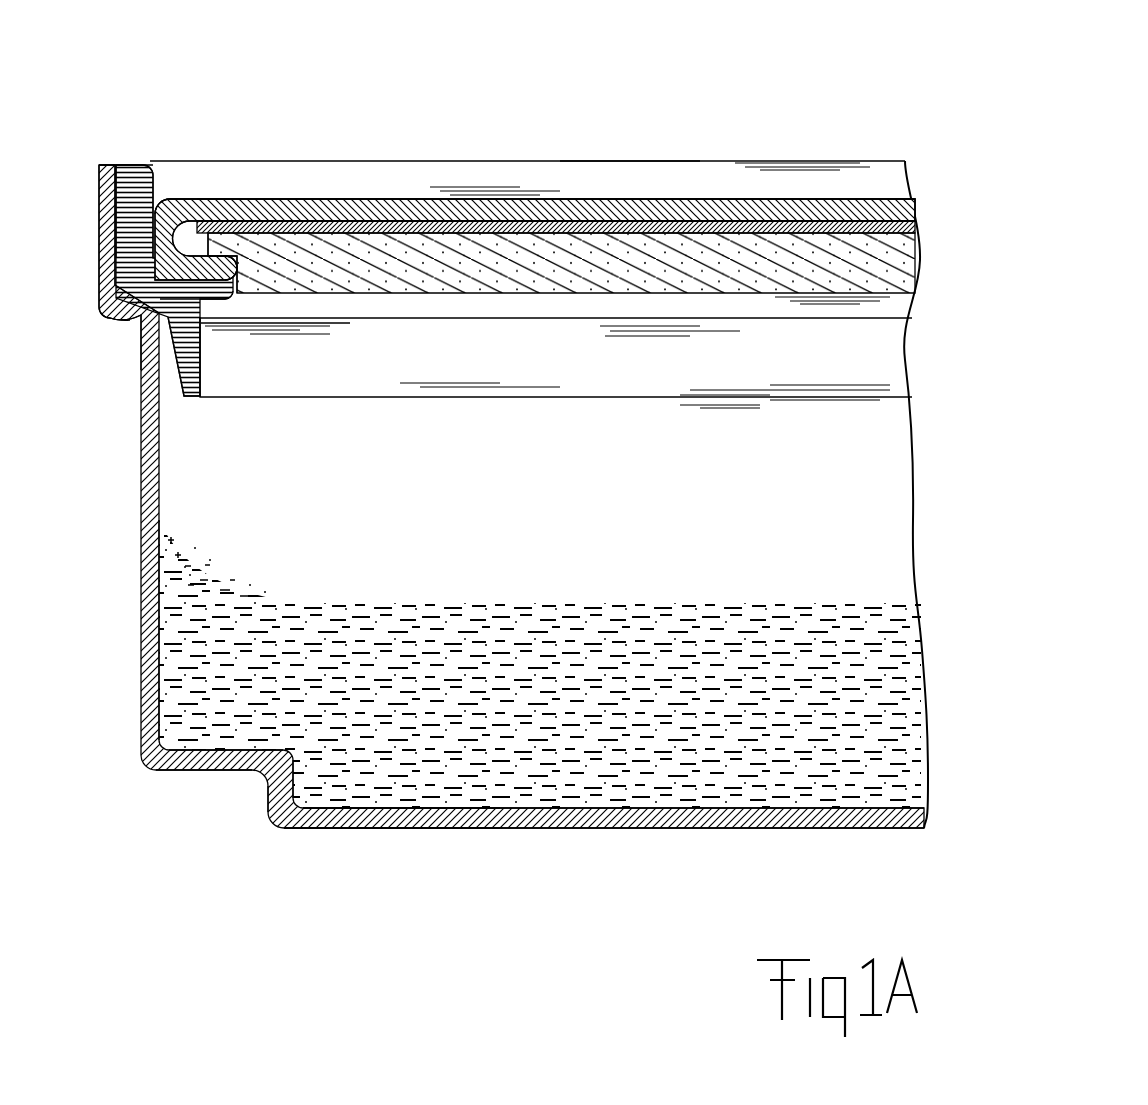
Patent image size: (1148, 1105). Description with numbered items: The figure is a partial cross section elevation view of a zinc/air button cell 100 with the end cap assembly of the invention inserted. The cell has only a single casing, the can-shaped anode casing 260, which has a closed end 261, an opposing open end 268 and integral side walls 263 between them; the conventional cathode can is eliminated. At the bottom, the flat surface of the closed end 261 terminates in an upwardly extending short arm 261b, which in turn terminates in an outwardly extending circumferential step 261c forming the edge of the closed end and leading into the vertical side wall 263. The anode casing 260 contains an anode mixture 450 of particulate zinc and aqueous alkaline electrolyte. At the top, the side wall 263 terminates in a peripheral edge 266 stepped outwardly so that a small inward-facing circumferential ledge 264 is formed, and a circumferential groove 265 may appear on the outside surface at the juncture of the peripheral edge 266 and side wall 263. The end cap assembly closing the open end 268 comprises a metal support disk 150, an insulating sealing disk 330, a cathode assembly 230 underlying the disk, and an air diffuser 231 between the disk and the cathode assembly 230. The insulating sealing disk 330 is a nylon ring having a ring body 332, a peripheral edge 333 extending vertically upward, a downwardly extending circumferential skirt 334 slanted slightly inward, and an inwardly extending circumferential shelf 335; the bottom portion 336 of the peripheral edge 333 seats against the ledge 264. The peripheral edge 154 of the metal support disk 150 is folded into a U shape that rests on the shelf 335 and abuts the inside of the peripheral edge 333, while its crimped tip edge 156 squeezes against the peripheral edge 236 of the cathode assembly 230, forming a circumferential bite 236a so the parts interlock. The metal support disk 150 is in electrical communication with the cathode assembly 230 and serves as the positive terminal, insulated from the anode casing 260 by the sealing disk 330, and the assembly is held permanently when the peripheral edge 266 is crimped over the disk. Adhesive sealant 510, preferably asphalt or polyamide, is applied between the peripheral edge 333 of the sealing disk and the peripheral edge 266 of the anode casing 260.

The zinc/air button cell 100 is at (528, 63).
The metal support disk 150 is at (641, 197).
The peripheral edge of metal support disk 154 is at (165, 205).
The crimped tip edge 156 is at (238, 270).
The cathode assembly 230 is at (343, 292).
The air diffuser 231 is at (376, 222).
The peripheral edge of cathode assembly 236 is at (208, 247).
The circumferential bite 236a is at (236, 267).
The anode casing 260 is at (140, 483).
The closed end 261 is at (673, 829).
The short arm 261b is at (268, 798).
The circumferential step 261c is at (160, 803).
The side wall 263 is at (142, 598).
The circumferential ledge 264 is at (131, 355).
The circumferential groove 265 is at (133, 327).
The peripheral edge of anode casing 266 is at (100, 200).
The open end 268 is at (573, 173).
The insulating sealing disk 330 is at (612, 418).
The ring body 332 is at (127, 280).
The peripheral edge of insulating sealing disk 333 is at (146, 165).
The circumferential skirt 334 is at (178, 388).
The circumferential shelf 335 is at (233, 284).
The bottom portion of peripheral edge 336 is at (128, 323).
The anode mixture 450 is at (573, 793).
The adhesive sealant 510 is at (117, 165).